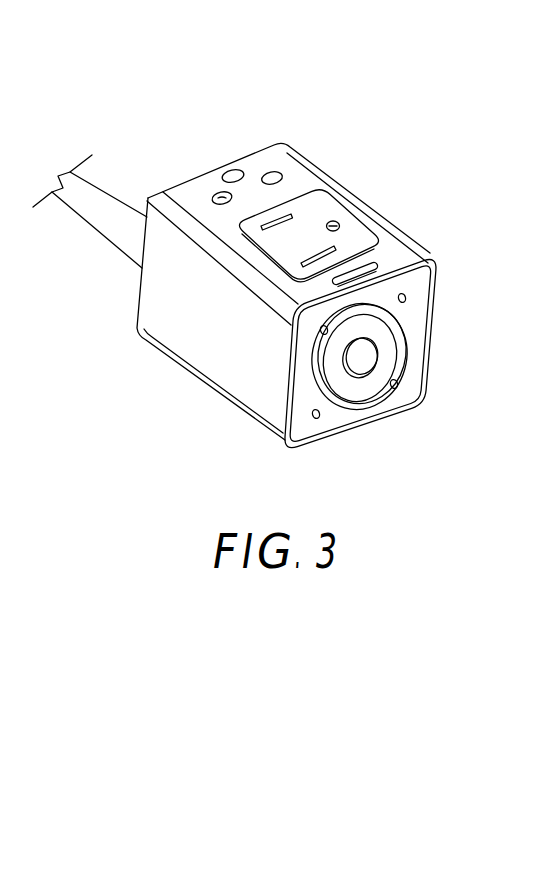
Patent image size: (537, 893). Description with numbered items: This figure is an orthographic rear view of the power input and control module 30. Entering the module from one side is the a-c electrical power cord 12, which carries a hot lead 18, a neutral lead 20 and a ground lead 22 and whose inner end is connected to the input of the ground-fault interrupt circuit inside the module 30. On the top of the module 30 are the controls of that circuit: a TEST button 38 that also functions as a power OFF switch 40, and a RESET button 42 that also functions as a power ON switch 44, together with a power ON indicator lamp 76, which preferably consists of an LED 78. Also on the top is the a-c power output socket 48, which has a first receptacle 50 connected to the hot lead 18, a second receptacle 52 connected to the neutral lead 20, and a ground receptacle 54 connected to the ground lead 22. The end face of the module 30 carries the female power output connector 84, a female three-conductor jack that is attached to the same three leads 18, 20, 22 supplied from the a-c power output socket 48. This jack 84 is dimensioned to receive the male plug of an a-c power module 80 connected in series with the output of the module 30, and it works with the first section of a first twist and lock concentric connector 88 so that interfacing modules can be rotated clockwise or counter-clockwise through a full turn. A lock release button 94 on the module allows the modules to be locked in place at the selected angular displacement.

The a-c electrical power cord 12 is at (90, 202).
The hot lead 18 is at (326, 161).
The neutral lead 20 is at (249, 368).
The ground lead 22 is at (390, 185).
The power input and control module 30 is at (190, 332).
The TEST button 38 is at (286, 121).
The power OFF switch 40 is at (272, 172).
The RESET button 42 is at (131, 266).
The power ON switch 44 is at (213, 198).
The a-c power output socket 48 is at (352, 238).
The first receptacle 50 is at (291, 217).
The second receptacle 52 is at (303, 262).
The ground receptacle 54 is at (337, 224).
The power ON indicator lamp 76 is at (176, 123).
The LED 78 is at (232, 170).
The a-c power module 80 is at (408, 379).
The female power output connector 84 is at (367, 341).
The first twist and lock concentric connector 88 is at (358, 405).
The lock release button 94 is at (358, 270).